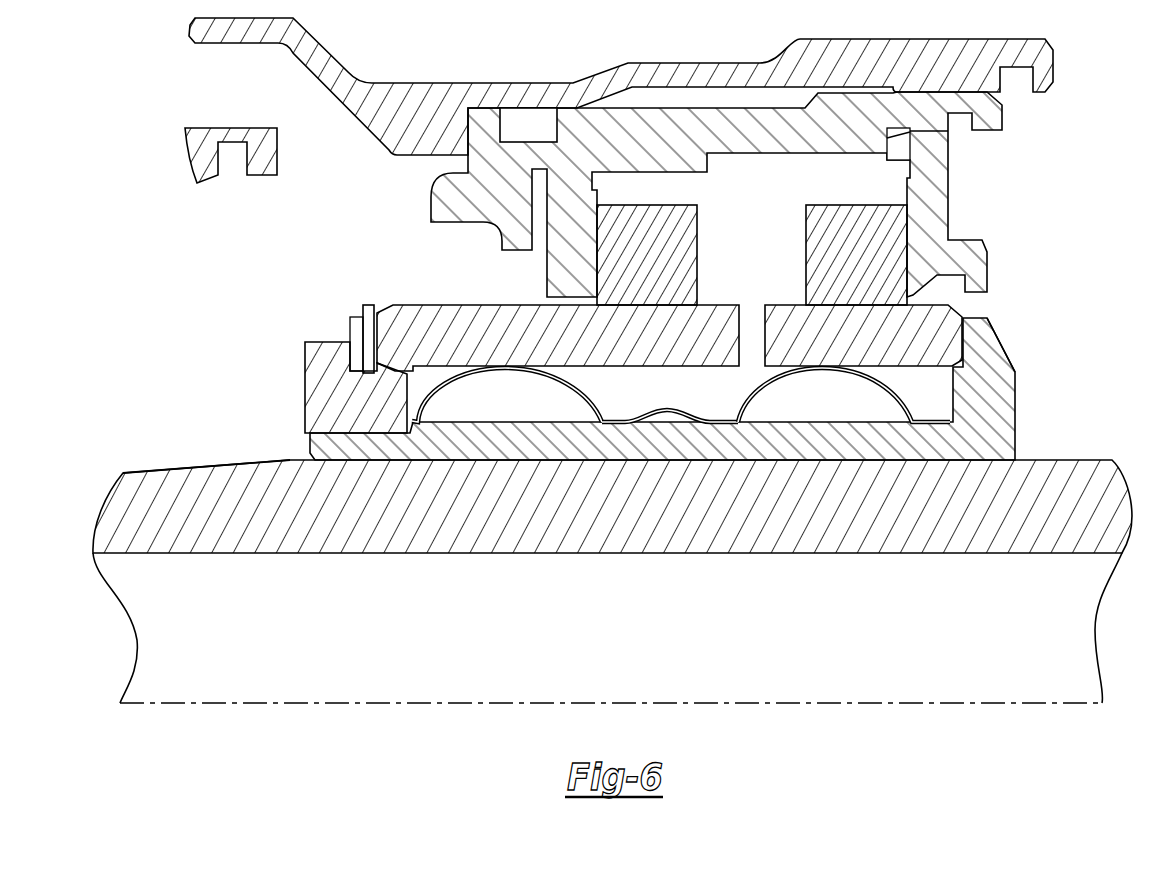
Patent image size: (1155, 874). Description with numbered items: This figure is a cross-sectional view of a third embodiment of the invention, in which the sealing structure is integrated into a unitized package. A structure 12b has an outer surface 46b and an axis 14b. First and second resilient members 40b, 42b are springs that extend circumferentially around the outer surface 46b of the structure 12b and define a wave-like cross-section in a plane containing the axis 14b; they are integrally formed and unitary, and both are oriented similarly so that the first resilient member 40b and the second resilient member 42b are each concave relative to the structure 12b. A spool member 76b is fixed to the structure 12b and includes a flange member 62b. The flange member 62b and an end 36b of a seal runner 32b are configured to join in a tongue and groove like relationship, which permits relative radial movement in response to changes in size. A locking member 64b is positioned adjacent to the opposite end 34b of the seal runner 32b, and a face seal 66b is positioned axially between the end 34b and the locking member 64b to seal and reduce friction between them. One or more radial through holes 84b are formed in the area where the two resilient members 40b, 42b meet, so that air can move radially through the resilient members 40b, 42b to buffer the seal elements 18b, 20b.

The structure 12b is at (982, 540).
The axis 14b is at (1017, 707).
The seal element 18b is at (655, 270).
The seal element 20b is at (875, 270).
The seal runner 32b is at (674, 353).
The end of the seal runner 34b is at (647, 300).
The end of the seal runner 36b is at (995, 309).
The first resilient member 40b is at (467, 395).
The second resilient member 42b is at (860, 395).
The outer surface 46b is at (205, 458).
The flange member 62b is at (990, 370).
The locking member 64b is at (330, 374).
The face seal 66b is at (353, 306).
The spool member 76b is at (1045, 337).
The radial through holes 84b is at (698, 407).